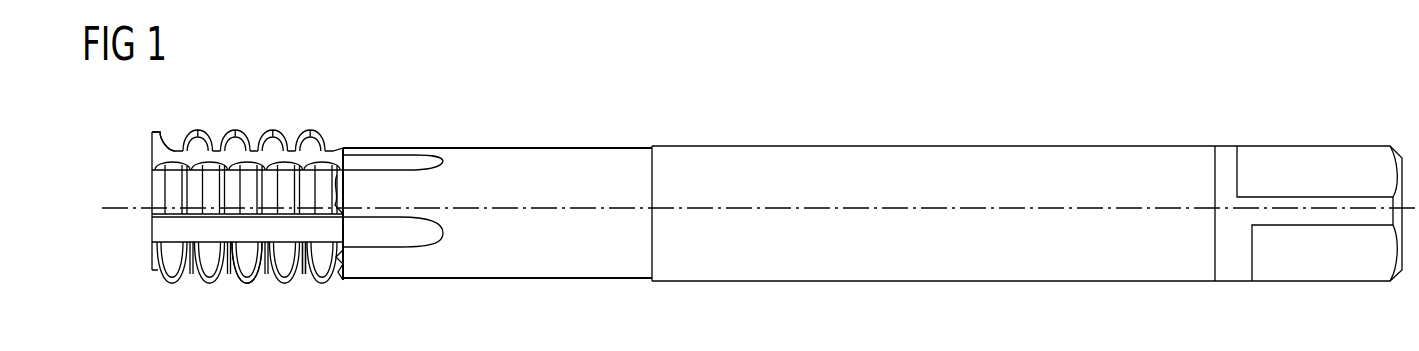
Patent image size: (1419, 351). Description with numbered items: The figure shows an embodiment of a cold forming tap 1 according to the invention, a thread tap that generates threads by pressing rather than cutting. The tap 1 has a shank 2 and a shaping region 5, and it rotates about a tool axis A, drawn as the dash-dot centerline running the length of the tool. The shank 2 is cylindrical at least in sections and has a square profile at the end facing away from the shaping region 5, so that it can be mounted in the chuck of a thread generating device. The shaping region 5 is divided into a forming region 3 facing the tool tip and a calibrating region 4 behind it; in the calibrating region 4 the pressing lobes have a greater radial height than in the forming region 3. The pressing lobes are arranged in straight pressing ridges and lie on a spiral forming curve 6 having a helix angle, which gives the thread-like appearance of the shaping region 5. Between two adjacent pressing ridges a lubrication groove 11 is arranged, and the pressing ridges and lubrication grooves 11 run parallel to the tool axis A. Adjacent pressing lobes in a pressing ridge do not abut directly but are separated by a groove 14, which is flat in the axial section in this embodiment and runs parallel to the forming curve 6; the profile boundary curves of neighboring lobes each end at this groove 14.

The cold forming tap 1 is at (872, 161).
The shank 2 is at (775, 145).
The forming region 3 is at (165, 175).
The calibrating region 4 is at (247, 216).
The shaping region 5 is at (345, 291).
The spiral forming curve 6 is at (257, 281).
The lubrication groove 11 is at (400, 162).
The groove 14 is at (302, 272).
The tool axis A is at (133, 207).